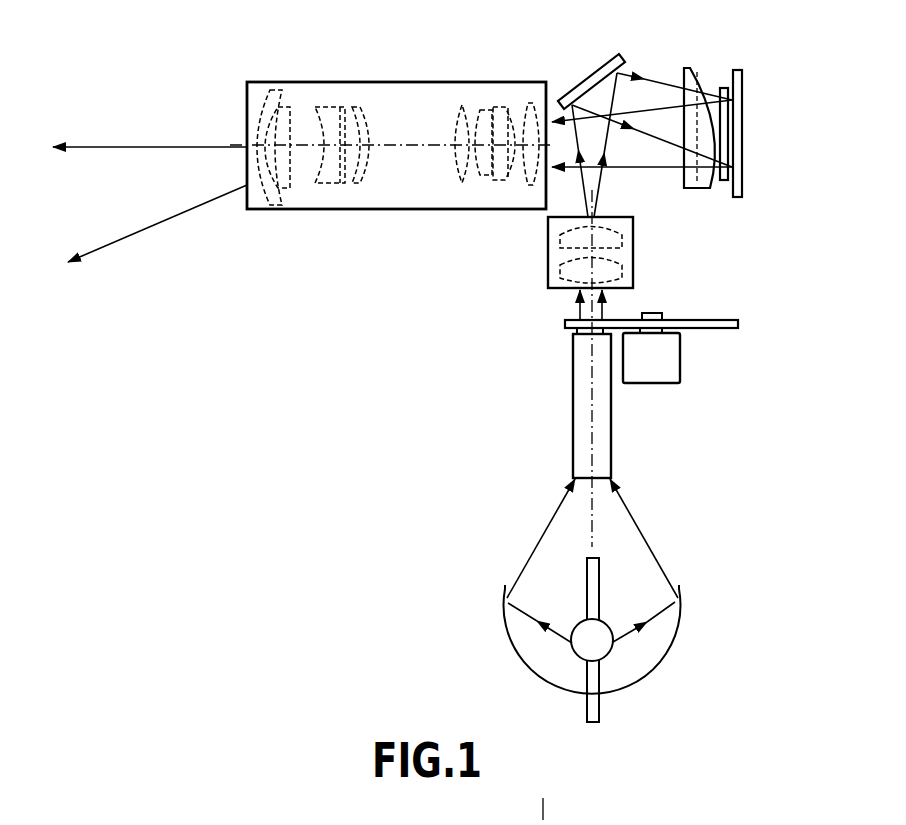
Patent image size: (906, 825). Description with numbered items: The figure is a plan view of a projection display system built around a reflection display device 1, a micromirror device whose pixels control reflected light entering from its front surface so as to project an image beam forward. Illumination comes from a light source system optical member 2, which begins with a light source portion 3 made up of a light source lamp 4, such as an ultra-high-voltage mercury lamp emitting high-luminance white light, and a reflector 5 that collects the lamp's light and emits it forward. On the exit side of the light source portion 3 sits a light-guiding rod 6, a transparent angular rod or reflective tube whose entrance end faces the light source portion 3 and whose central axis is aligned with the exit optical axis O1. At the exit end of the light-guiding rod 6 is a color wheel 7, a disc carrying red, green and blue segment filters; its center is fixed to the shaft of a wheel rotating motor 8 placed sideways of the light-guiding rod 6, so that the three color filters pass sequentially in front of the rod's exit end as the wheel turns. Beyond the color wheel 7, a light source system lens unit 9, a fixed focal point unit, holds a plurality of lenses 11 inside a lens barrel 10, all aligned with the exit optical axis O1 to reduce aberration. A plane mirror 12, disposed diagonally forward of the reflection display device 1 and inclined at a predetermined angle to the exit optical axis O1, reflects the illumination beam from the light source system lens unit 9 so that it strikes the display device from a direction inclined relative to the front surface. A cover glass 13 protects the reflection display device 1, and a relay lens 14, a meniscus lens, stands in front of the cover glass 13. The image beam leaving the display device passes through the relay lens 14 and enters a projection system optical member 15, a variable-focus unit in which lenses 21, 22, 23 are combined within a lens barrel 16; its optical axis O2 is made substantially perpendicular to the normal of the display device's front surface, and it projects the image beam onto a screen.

The reflection display device 1 is at (745, 123).
The light source system optical member 2 is at (540, 497).
The light source portion 3 is at (520, 650).
The light source lamp 4 is at (603, 648).
The reflector 5 is at (674, 637).
The light-guiding rod 6 is at (575, 400).
The color wheel 7 is at (700, 319).
The wheel rotating motor 8 is at (662, 356).
The light source system lens unit 9 is at (595, 265).
The lens barrel 10 is at (548, 238).
The lenses 11 is at (622, 233).
The mirror 12 is at (588, 78).
The cover glass 13 is at (722, 87).
The relay lens 14 is at (695, 67).
The projection system optical member 15 is at (330, 230).
The lens barrel 16 is at (405, 210).
The lens 21 is at (475, 110).
The lens 22 is at (357, 107).
The lens 23 is at (280, 90).
The exit optical axis O1 is at (593, 517).
The optical axis O2 is at (412, 145).